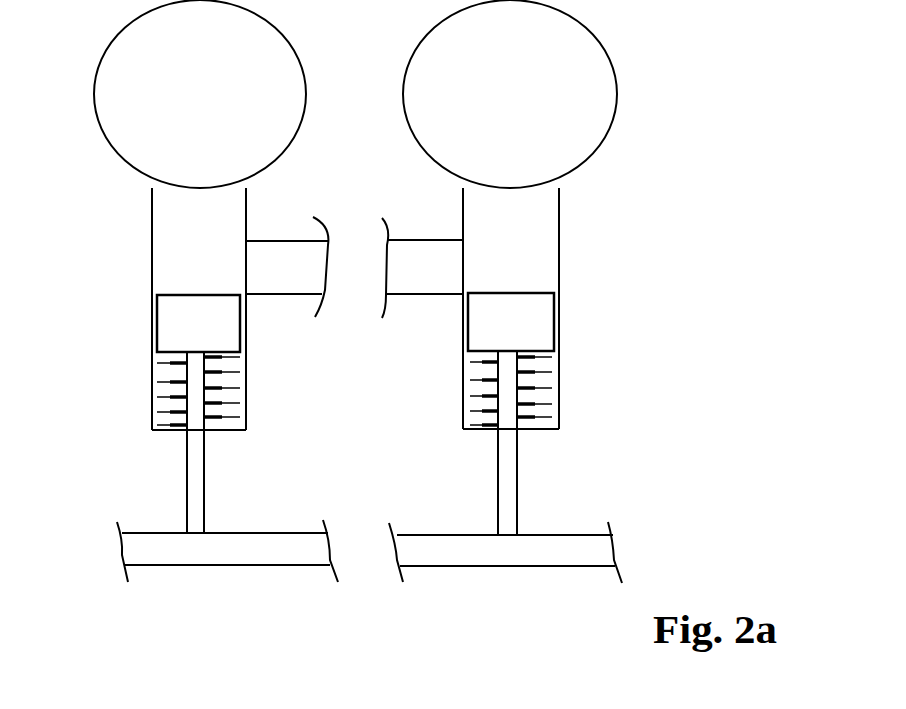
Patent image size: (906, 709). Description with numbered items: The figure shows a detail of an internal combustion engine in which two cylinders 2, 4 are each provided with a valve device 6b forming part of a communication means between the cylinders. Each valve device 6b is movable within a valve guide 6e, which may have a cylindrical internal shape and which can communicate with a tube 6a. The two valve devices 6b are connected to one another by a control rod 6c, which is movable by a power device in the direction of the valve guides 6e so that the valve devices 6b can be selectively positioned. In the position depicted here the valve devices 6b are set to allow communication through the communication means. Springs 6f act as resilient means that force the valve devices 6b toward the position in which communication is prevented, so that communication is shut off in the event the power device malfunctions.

The cylinder 2 is at (208, 118).
The cylinder 4 is at (525, 116).
The tube 6a is at (412, 243).
The valve device 6b is at (157, 313).
The control rod 6c is at (178, 566).
The valve guide 6e is at (150, 405).
The spring 6f is at (470, 387).